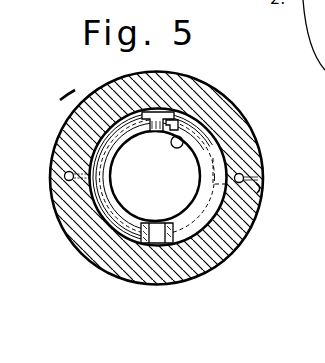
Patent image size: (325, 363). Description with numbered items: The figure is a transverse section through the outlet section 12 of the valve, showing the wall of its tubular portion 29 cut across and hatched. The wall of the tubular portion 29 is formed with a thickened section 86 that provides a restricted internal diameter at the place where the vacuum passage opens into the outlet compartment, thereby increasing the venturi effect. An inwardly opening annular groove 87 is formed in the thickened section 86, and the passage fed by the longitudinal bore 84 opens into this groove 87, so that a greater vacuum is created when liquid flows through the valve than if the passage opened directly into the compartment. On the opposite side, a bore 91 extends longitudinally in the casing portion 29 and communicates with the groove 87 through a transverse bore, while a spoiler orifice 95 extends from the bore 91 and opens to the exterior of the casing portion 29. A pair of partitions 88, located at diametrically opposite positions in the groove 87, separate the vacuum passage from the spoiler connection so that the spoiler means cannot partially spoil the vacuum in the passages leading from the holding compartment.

The outlet section 12 is at (233, 251).
The tubular portion 29 is at (77, 112).
The longitudinal bore 84 is at (68, 180).
The thickened section 86 is at (210, 110).
The annular groove 87 is at (183, 143).
The partitions 88 is at (153, 122).
The bore 91 is at (242, 174).
The spoiler orifice 95 is at (262, 191).